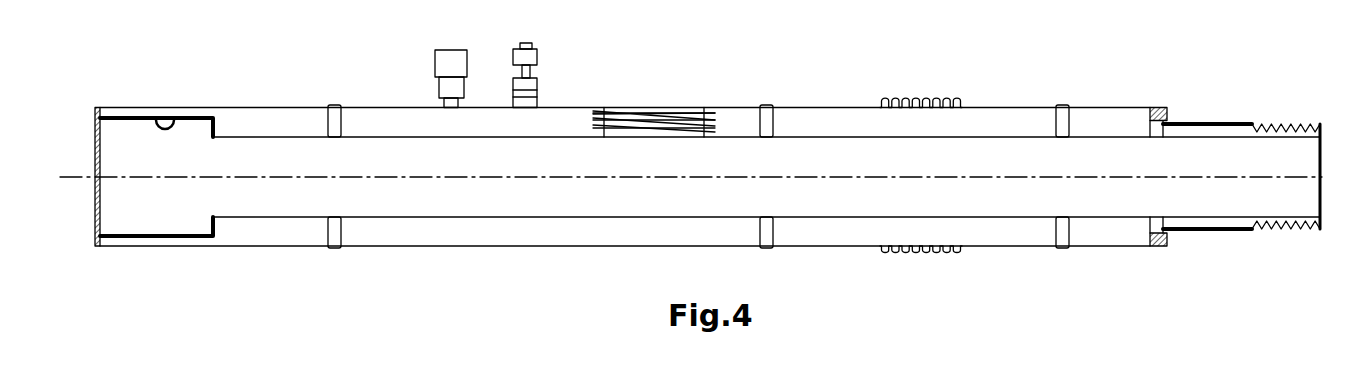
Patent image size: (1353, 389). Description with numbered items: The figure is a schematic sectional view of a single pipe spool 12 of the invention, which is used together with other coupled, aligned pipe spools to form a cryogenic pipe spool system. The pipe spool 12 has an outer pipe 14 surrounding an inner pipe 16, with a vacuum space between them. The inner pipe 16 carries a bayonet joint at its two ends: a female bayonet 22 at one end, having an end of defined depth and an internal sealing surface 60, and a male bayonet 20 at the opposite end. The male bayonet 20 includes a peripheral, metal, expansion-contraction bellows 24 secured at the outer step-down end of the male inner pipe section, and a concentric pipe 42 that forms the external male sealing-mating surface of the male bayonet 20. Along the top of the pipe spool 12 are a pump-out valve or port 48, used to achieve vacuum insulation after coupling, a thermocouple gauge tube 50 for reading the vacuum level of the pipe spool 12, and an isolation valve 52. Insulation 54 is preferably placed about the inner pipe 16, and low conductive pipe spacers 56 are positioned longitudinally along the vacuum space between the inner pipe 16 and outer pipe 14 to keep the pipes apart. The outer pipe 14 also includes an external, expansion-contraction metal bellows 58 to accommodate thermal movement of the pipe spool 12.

The pipe spool 12 is at (577, 272).
The outer pipe 14 is at (975, 108).
The inner pipe 16 is at (843, 136).
The male bayonet 20 is at (1297, 215).
The female bayonet 22 is at (132, 116).
The expansion-contraction bellows 24 is at (1288, 122).
The concentric pipe 42 is at (1195, 122).
The pump-out valve or port 48 is at (450, 50).
The thermocouple gauge tube 50 is at (523, 43).
The isolation valve 52 is at (538, 92).
The insulation 54 is at (637, 108).
The low conductive pipe spacers 56 is at (333, 105).
The expansion-contraction metal bellows 58 is at (920, 99).
The internal sealing surface 60 is at (160, 116).